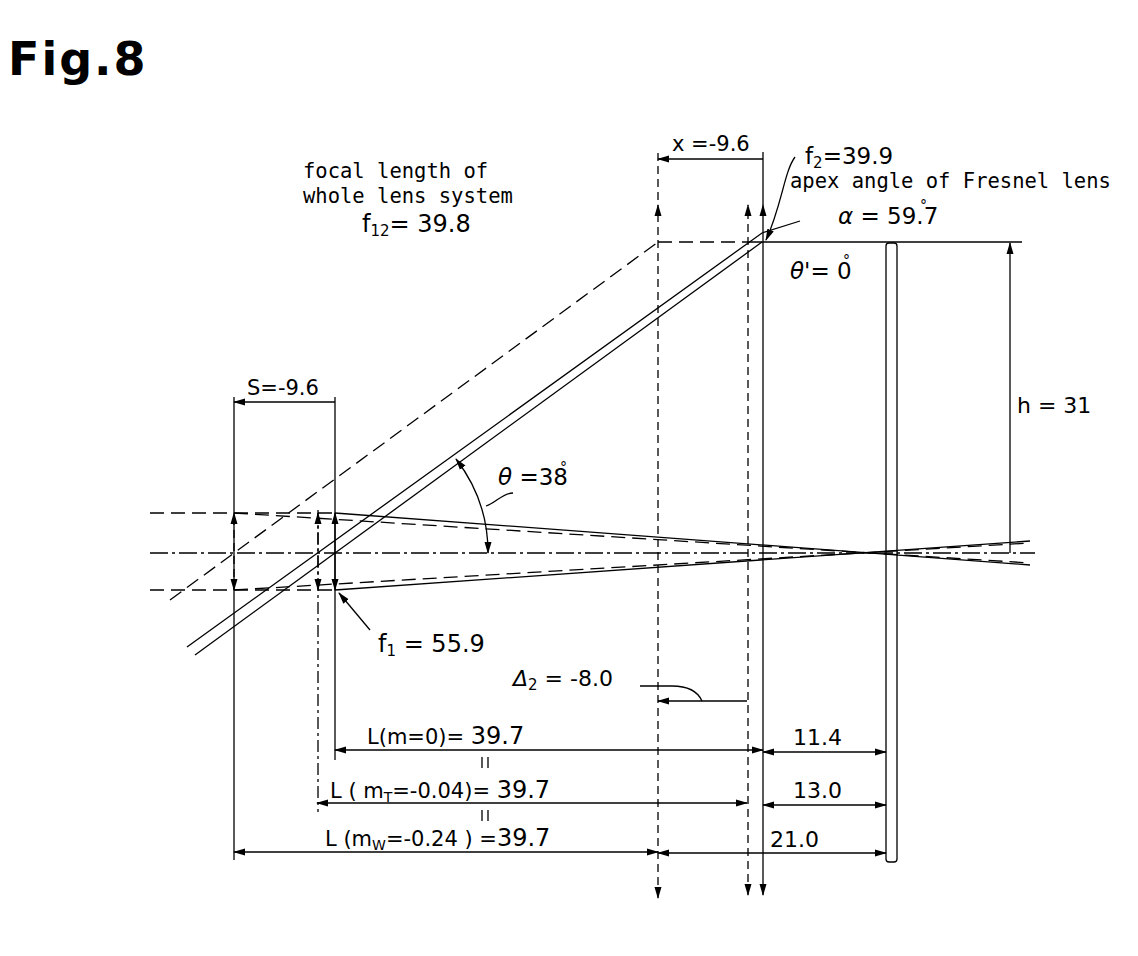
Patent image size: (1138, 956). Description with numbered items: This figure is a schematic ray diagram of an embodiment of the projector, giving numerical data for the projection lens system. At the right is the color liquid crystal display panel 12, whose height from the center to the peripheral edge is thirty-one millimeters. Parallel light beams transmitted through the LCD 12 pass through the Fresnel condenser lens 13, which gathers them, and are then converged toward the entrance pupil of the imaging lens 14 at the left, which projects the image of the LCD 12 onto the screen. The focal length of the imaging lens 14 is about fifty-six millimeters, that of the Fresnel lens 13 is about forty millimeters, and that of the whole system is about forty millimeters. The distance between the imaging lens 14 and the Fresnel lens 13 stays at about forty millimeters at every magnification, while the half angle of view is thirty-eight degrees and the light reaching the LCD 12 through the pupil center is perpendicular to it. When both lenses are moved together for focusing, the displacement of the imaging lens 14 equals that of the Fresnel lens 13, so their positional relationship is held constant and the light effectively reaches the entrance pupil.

The color liquid crystal display panel 12 is at (898, 441).
The Fresnel condenser lens 13 is at (658, 384).
The imaging lens 14 is at (233, 548).